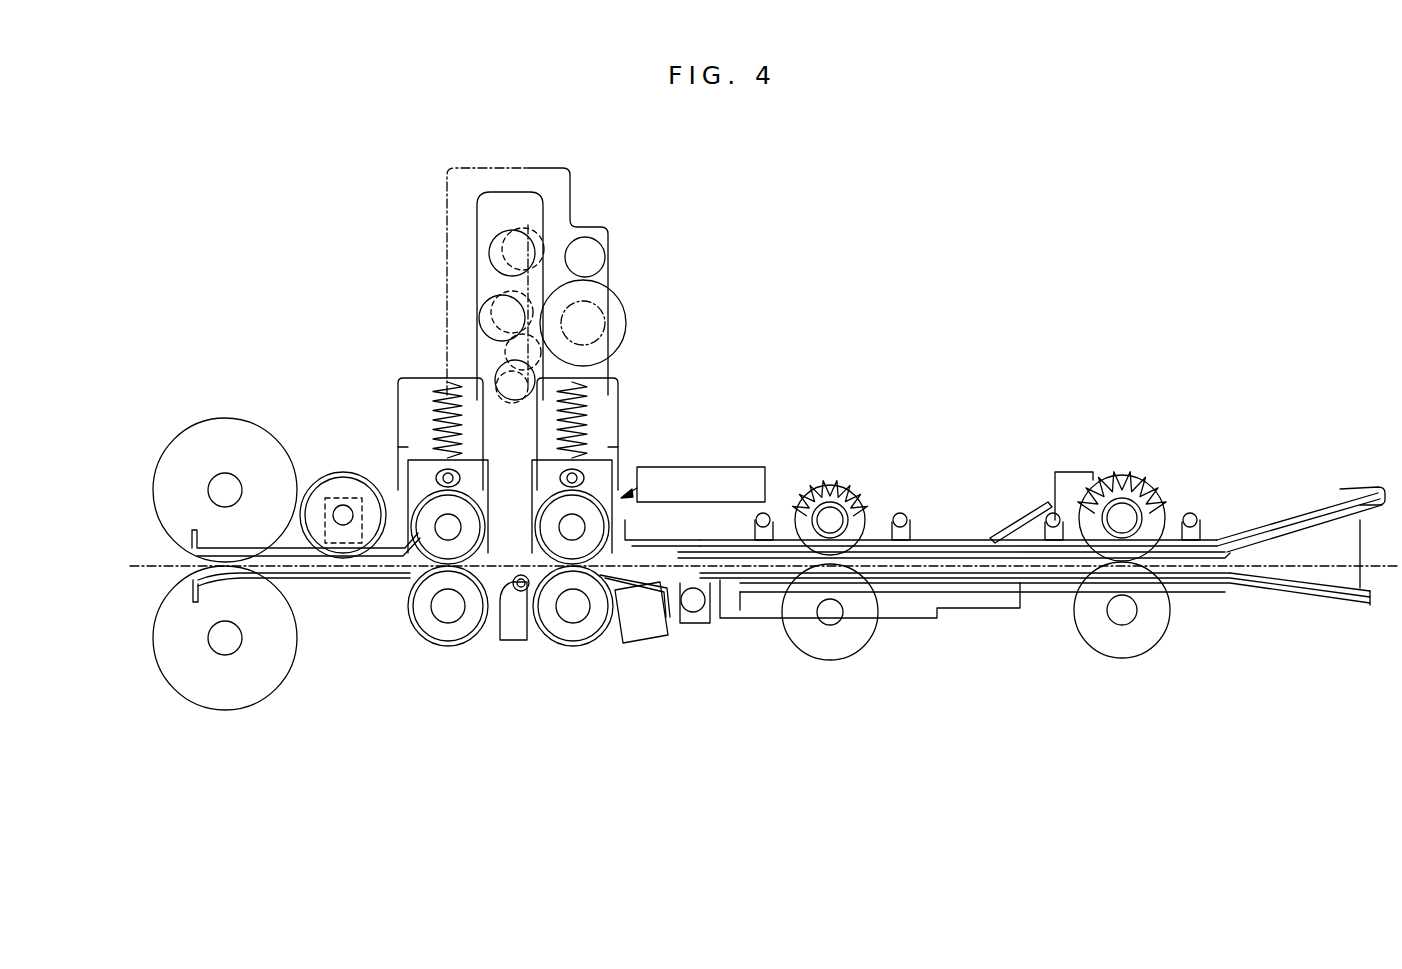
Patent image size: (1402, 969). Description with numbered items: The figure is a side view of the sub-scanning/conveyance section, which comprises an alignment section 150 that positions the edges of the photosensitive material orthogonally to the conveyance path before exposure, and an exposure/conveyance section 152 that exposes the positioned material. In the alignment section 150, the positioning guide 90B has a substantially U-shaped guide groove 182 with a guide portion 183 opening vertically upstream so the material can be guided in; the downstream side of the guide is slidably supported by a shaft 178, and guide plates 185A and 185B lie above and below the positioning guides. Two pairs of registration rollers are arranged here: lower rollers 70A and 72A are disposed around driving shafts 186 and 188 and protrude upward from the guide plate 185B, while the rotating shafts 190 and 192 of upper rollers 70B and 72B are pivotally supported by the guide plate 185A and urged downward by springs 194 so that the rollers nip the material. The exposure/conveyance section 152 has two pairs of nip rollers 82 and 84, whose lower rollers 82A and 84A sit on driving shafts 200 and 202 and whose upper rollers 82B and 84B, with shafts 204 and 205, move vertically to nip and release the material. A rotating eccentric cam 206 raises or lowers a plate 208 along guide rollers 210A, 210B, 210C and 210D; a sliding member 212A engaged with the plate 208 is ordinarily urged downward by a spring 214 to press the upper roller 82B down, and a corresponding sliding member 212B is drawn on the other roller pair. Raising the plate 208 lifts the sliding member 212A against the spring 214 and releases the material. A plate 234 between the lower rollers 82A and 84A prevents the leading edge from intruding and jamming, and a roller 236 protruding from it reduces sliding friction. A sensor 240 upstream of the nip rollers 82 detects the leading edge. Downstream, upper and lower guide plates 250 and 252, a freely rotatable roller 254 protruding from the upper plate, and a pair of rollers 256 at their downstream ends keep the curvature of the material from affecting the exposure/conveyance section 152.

The alignment section 150 is at (980, 405).
The exposure/conveyance section 152 is at (369, 338).
The plate 208 is at (526, 165).
The guide roller 210A is at (497, 243).
The guide roller 210B is at (495, 300).
The guide roller 210C is at (480, 335).
The guide roller 210D is at (473, 368).
The rotating eccentric cam 206 is at (627, 296).
The spring 214 is at (433, 390).
The sliding member 212A is at (606, 470).
The holder 212B is at (418, 467).
The pair of nip rollers 84 is at (407, 508).
The lower roller 84A is at (412, 618).
The upper roller 84B is at (596, 470).
The pair of nip rollers 82 is at (575, 524).
The lower roller 82A is at (600, 632).
The upper roller 82B is at (632, 525).
The shaft 202 is at (455, 617).
The shaft 200 is at (575, 617).
The plate 234 is at (514, 618).
The roller 236 is at (522, 592).
The upper guide plate 250 is at (290, 540).
The lower guide plate 252 is at (305, 580).
The freely rotatable roller 254 is at (338, 474).
The pair of rollers 256 is at (180, 600).
The shaft 205 is at (410, 578).
The shaft 204 is at (701, 484).
The sensor 240 is at (730, 487).
The guide plate 185A is at (932, 538).
The guide plate 185B is at (1222, 592).
The guide groove 182 is at (975, 555).
The guide portion 183 is at (1308, 543).
The positioning guide 90B is at (1370, 487).
The shaft 178 is at (697, 608).
The upper roller 72B is at (832, 490).
The lower roller 72A is at (862, 634).
The rotating shaft 192 is at (805, 492).
The spring 194 is at (858, 512).
The driving shaft 188 is at (826, 622).
The upper roller 70B is at (1132, 495).
The lower roller 70A is at (1143, 636).
The rotating shaft 190 is at (1088, 474).
The driving shaft 186 is at (1114, 622).